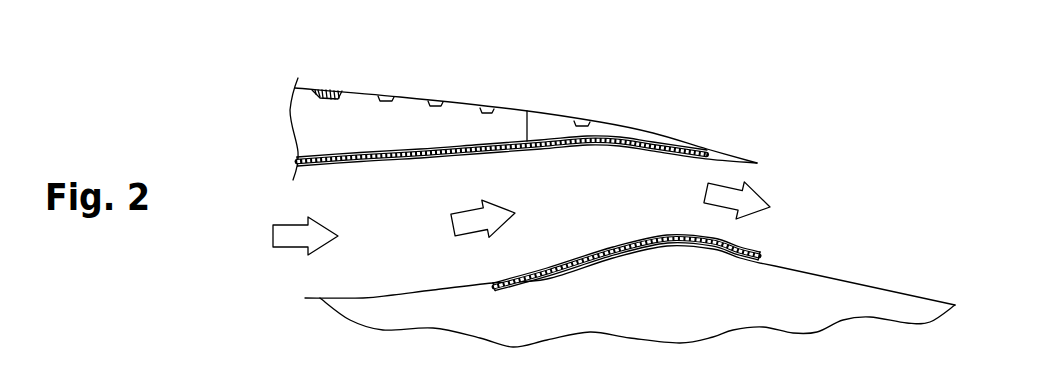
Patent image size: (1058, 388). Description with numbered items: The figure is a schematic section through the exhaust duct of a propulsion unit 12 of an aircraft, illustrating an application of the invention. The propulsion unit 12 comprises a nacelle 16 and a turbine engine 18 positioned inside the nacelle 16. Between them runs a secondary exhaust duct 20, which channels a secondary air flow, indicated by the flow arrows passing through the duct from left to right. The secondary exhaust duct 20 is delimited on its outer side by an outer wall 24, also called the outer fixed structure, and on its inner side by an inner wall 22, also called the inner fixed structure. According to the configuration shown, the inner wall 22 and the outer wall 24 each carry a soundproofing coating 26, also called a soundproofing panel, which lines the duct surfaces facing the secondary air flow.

The propulsion unit 12 is at (258, 160).
The nacelle 16 is at (329, 92).
The turbine engine 18 is at (700, 302).
The secondary exhaust duct 20 is at (521, 218).
The inner wall 22 is at (382, 288).
The outer wall 24 is at (340, 176).
The soundproofing coating 26 is at (440, 138).